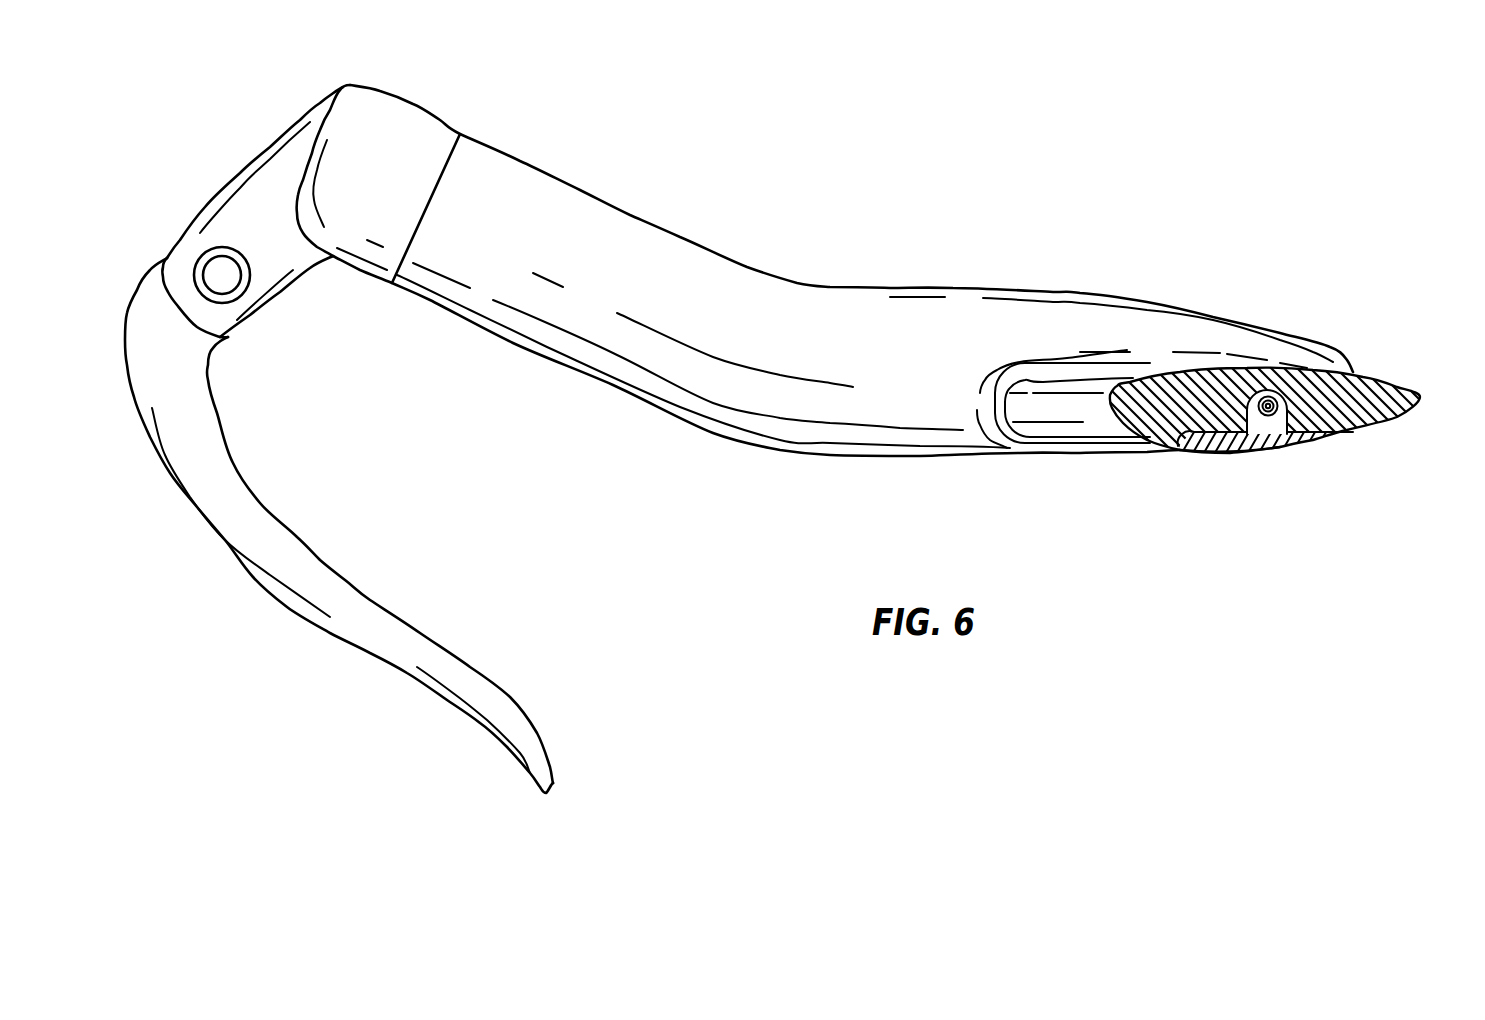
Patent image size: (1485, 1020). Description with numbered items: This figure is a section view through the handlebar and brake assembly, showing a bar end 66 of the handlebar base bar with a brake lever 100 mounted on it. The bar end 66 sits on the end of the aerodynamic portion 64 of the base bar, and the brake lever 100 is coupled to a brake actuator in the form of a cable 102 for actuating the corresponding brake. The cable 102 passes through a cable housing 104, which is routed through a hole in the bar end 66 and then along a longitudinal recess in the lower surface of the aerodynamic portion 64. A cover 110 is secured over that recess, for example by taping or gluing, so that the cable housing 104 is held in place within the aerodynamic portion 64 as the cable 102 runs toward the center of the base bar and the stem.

The bar end 66 is at (790, 291).
The brake lever 100 is at (471, 675).
The aerodynamic portion 64 is at (1222, 423).
The cable 102 is at (1265, 417).
The cable housing 104 is at (1287, 448).
The cover 110 is at (1218, 455).